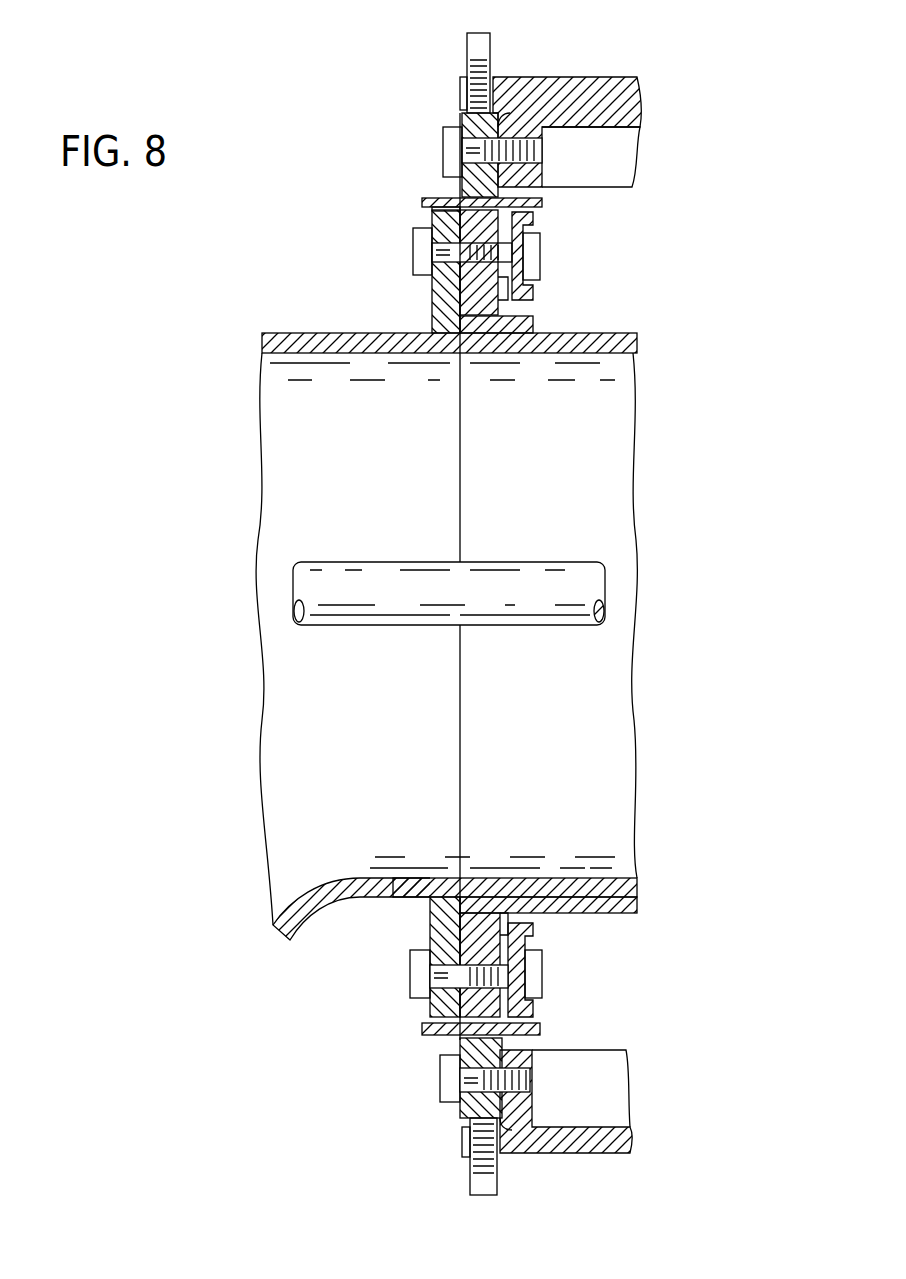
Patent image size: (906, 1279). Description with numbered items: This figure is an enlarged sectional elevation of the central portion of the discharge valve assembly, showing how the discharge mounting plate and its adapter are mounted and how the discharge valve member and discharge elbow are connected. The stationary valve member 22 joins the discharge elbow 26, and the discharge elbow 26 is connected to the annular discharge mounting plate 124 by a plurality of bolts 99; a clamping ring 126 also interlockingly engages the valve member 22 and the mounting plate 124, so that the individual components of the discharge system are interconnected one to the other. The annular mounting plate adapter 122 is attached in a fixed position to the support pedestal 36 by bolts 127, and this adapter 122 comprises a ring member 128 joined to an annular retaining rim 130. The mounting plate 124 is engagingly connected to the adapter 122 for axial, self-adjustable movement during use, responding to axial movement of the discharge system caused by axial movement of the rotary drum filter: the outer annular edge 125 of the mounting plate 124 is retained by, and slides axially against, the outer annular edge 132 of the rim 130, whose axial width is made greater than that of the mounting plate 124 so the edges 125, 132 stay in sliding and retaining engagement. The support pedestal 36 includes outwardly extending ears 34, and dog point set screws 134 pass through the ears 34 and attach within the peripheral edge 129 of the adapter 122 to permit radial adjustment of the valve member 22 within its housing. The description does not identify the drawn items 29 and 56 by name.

The stationary valve member 22 is at (575, 333).
The discharge elbow 26 is at (362, 333).
The clamp block 29 is at (432, 220).
The ears 34 is at (460, 92).
The support pedestal 36 is at (555, 77).
The pipe 56 is at (380, 568).
The bolts 99 is at (413, 262).
The annular mounting plate adapter 122 is at (460, 177).
The annular discharge mounting plate 124 is at (542, 203).
The outer annular edge of mounting plate 125 is at (432, 213).
The clamping ring 126 is at (533, 222).
The bolts 127 is at (443, 135).
The ring member 128 is at (462, 195).
The peripheral edge of annular mounting plate adapter 129 is at (500, 105).
The annular retaining rim 130 is at (520, 187).
The outer annular edge of rim 132 is at (422, 1028).
The dog point set screws 134 is at (467, 45).